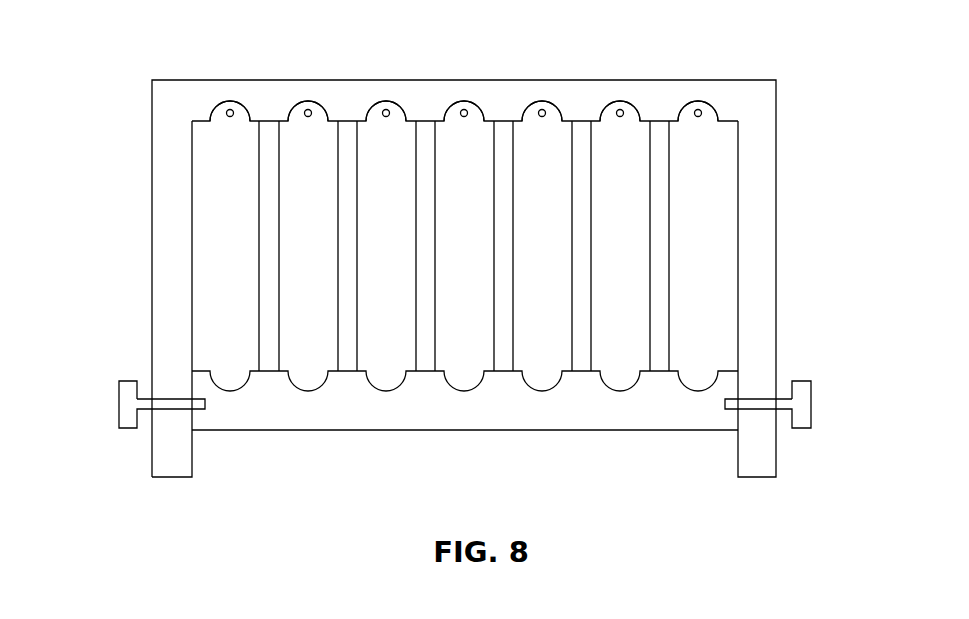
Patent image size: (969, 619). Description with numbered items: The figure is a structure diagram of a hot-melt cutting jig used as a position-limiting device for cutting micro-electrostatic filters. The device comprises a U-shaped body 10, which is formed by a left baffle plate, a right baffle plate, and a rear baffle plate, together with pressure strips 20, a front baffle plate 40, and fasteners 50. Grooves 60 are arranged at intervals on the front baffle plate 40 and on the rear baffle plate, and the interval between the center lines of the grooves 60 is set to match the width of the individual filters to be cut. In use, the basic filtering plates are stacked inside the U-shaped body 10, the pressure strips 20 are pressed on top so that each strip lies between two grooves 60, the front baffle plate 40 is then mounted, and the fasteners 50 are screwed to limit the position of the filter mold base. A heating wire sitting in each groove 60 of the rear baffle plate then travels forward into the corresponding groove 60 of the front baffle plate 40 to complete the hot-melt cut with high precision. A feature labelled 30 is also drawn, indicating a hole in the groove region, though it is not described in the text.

The U-shaped body 10 is at (642, 91).
The pressure strips 20 is at (267, 215).
The hole 30 is at (703, 116).
The front baffle plate 40 is at (358, 410).
The fasteners 50 is at (803, 405).
The grooves 60 is at (220, 108).